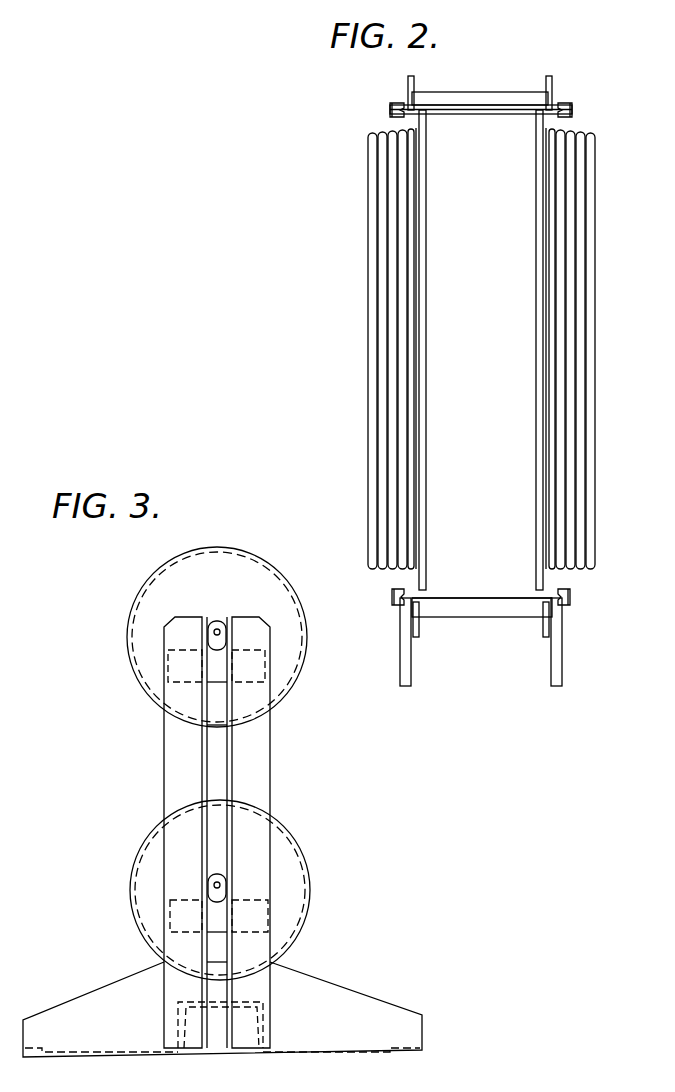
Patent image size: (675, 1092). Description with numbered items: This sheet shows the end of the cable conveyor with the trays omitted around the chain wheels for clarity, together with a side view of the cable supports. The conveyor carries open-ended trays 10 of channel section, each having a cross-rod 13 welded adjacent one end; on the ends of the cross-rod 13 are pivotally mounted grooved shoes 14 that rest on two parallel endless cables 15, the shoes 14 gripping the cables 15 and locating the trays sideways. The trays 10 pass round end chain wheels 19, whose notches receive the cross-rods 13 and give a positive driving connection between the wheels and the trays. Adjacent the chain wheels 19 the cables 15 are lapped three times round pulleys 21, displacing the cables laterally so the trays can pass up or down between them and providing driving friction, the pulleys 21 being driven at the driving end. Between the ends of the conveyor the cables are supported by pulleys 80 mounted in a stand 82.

In FIG. 2, the tray 10 is at (491, 95).
In FIG. 2, the cross-rod 13 is at (484, 113).
In FIG. 2, the shoe 14 is at (401, 104).
In FIG. 2, the cable 15 is at (386, 568).
In FIG. 2, the chain wheel 19 is at (536, 234).
In FIG. 2, the pulley 21 is at (372, 510).
In FIG. 3, the supporting pulley 80 is at (165, 563).
In FIG. 3, the stand 82 is at (271, 752).